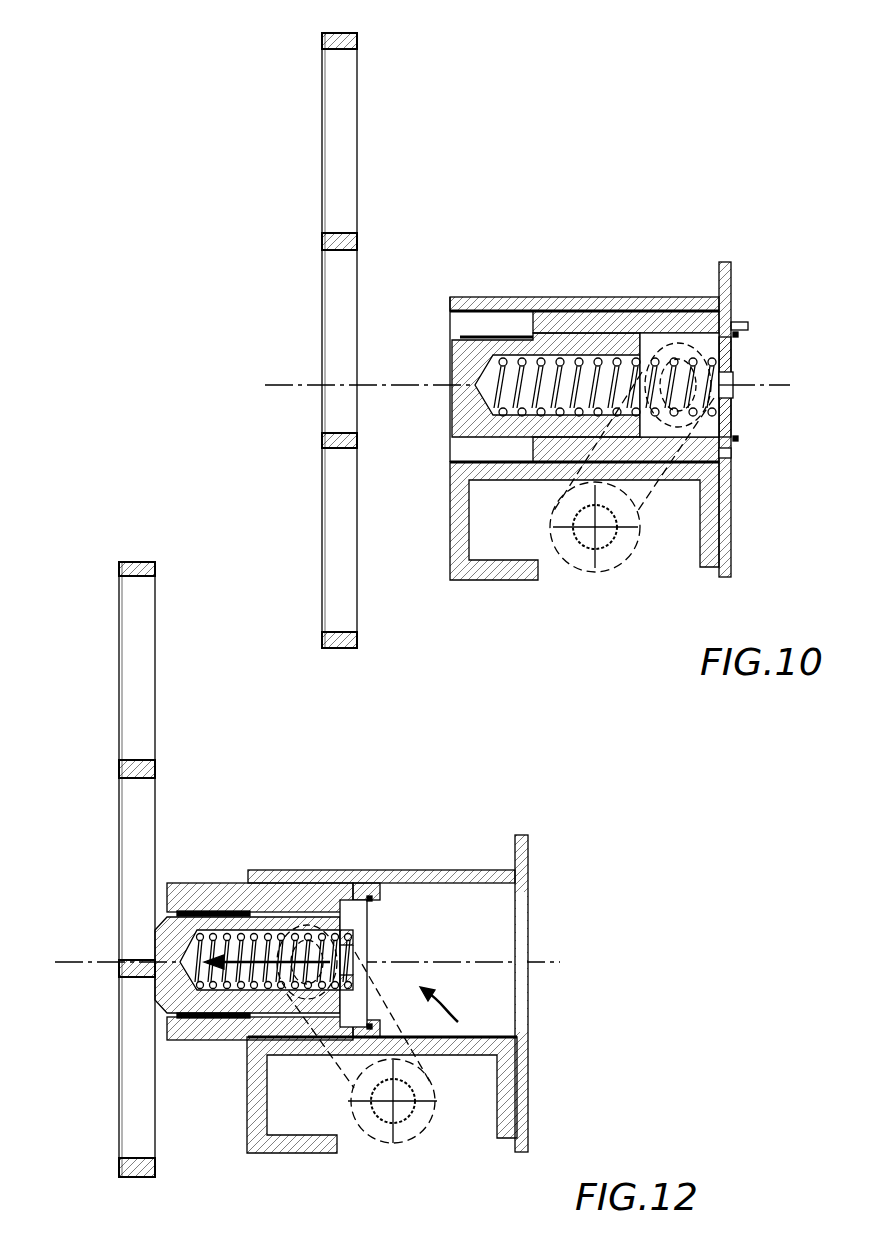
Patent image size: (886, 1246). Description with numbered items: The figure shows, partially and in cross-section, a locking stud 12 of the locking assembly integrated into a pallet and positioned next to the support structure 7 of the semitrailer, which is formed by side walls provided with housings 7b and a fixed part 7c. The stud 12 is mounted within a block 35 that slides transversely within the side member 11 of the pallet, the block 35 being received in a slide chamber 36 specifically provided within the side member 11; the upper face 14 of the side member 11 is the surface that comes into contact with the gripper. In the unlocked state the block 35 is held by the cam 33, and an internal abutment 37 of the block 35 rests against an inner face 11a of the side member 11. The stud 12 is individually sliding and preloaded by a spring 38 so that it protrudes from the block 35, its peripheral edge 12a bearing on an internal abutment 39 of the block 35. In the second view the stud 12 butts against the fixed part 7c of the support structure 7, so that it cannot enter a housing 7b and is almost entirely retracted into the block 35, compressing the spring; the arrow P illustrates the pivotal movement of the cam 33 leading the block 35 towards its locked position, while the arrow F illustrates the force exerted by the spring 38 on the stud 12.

In FIG. 10, the support structure 7 is at (297, 510).
In FIG. 12, the support structure 7 is at (172, 1180).
In FIG. 10, the housing 7b is at (337, 130).
In FIG. 12, the housing 7b is at (140, 640).
In FIG. 12, the fixed part 7c is at (140, 962).
In FIG. 10, the side member 11 is at (627, 290).
In FIG. 12, the side member 11 is at (357, 864).
In FIG. 10, the inner face 11a is at (735, 272).
In FIG. 10, the stud 12 is at (495, 337).
In FIG. 12, the stud 12 is at (153, 993).
In FIG. 12, the peripheral edge 12a is at (230, 908).
In FIG. 10, the upper face 14 is at (562, 297).
In FIG. 12, the upper face 14 is at (411, 868).
In FIG. 10, the cam 33 is at (637, 500).
In FIG. 12, the cam 33 is at (350, 1080).
In FIG. 10, the block 35 is at (673, 323).
In FIG. 12, the block 35 is at (312, 900).
In FIG. 10, the slide chamber 36 is at (502, 448).
In FIG. 12, the slide chamber 36 is at (467, 903).
In FIG. 10, the internal abutment 37 is at (685, 315).
In FIG. 10, the spring 38 is at (612, 380).
In FIG. 12, the spring 38 is at (342, 955).
In FIG. 12, the internal abutment 39 is at (178, 903).
In FIG. 12, the arrow F is at (233, 988).
In FIG. 12, the arrow P is at (460, 1005).